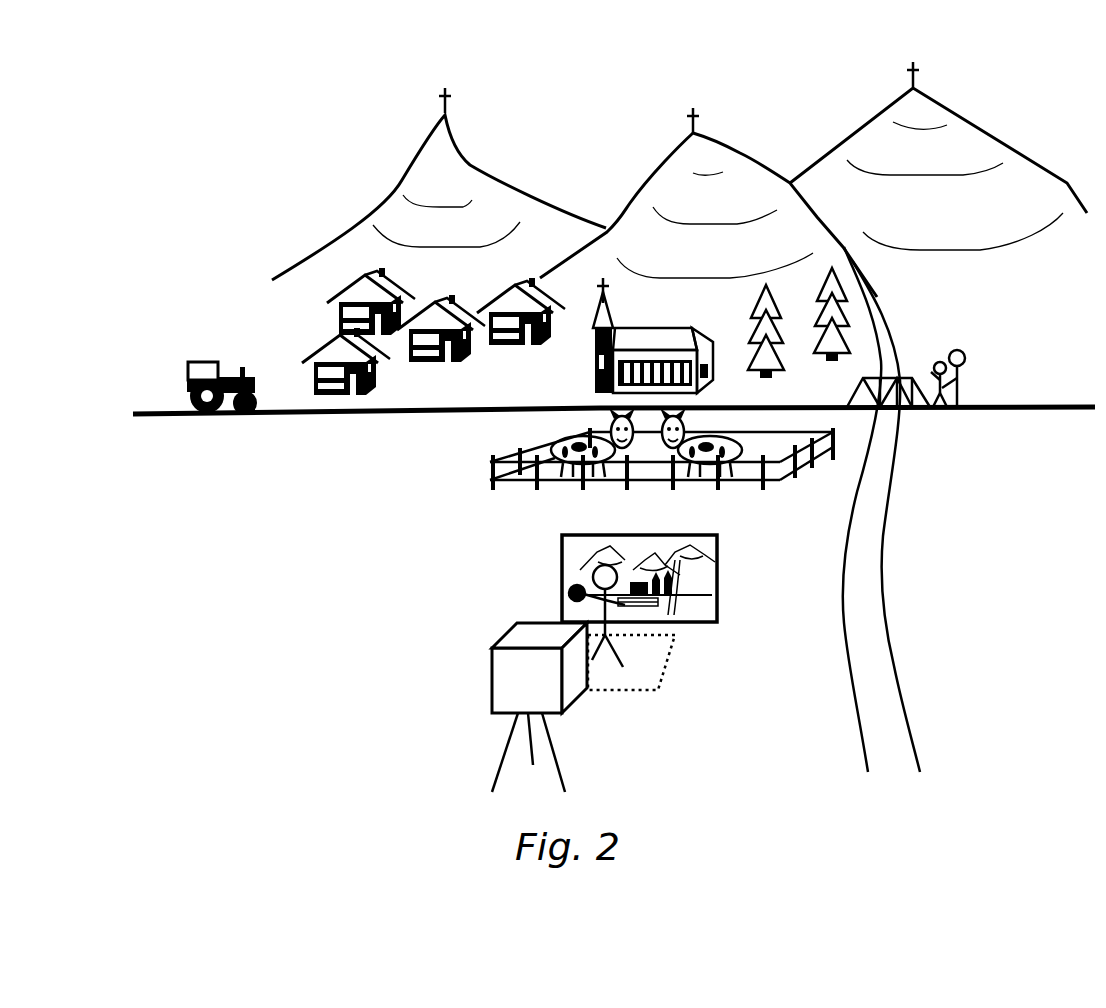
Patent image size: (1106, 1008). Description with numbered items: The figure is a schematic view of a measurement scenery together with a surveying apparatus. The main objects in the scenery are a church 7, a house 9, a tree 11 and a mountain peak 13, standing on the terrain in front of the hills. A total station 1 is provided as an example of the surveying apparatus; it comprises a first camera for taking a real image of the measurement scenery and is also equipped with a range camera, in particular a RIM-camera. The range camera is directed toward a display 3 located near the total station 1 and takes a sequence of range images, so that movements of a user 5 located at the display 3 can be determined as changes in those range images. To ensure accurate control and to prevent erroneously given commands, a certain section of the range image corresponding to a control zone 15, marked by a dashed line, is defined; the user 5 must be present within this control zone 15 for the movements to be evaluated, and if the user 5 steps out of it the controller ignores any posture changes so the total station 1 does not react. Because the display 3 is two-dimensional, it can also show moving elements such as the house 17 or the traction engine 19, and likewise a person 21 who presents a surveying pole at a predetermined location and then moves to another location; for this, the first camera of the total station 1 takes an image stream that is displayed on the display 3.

The total station 1 is at (515, 675).
The display 3 is at (598, 547).
The user 5 is at (605, 575).
The church 7 is at (605, 290).
The house 9 is at (340, 314).
The tree 11 is at (820, 300).
The mountain peak 13 is at (698, 113).
The control zone 15 is at (633, 652).
The house 17 is at (613, 465).
The traction engine 19 is at (206, 376).
The person 21 is at (967, 360).